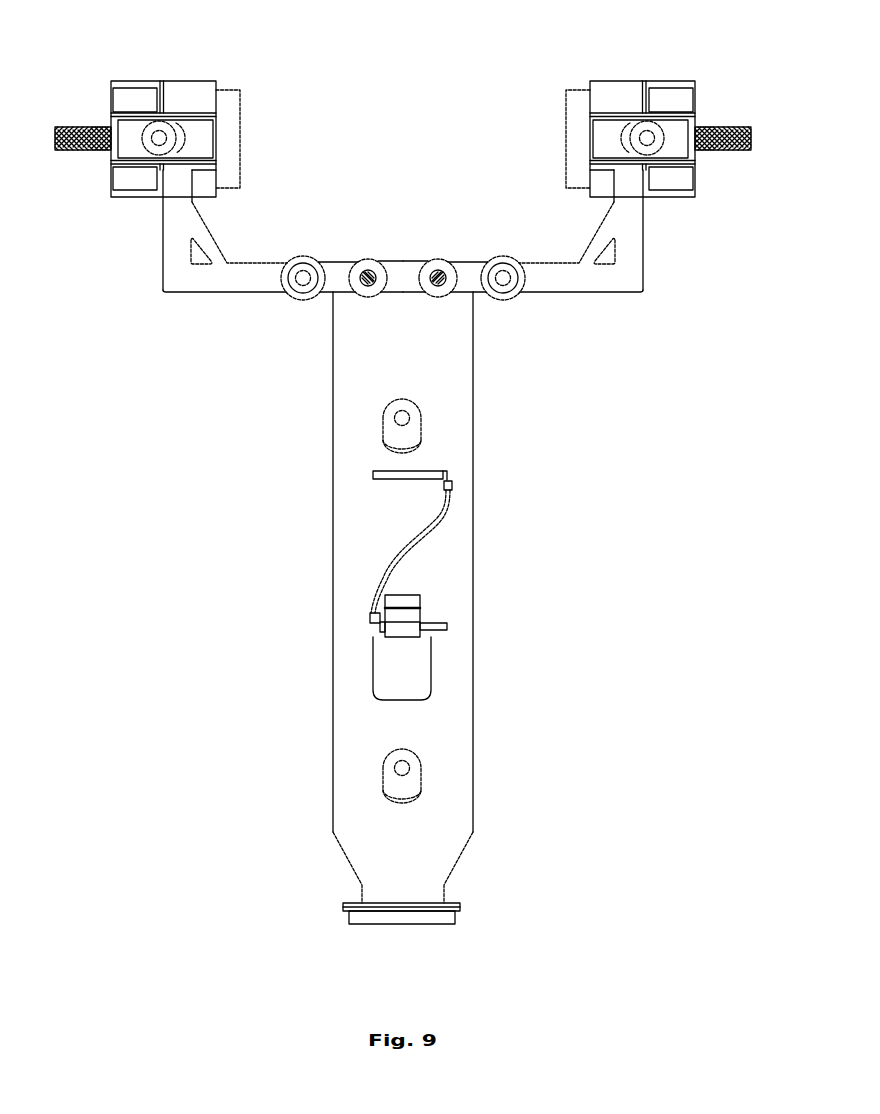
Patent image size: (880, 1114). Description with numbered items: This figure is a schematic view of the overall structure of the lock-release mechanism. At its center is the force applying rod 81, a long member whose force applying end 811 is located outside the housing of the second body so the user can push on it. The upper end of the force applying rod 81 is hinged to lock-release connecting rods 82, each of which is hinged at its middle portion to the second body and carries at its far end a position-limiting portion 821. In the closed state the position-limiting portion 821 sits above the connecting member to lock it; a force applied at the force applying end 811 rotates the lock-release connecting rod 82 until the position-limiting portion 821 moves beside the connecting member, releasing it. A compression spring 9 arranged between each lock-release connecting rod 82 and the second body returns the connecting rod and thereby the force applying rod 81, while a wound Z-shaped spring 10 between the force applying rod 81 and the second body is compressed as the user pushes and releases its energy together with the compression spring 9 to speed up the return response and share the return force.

The compression spring 9 is at (72, 125).
The position-limiting portion 821 is at (188, 100).
The lock-release connecting rod 82 is at (168, 252).
The force applying rod 81 is at (346, 731).
The force applying end 811 is at (348, 920).
The Z-shaped spring 10 is at (435, 524).